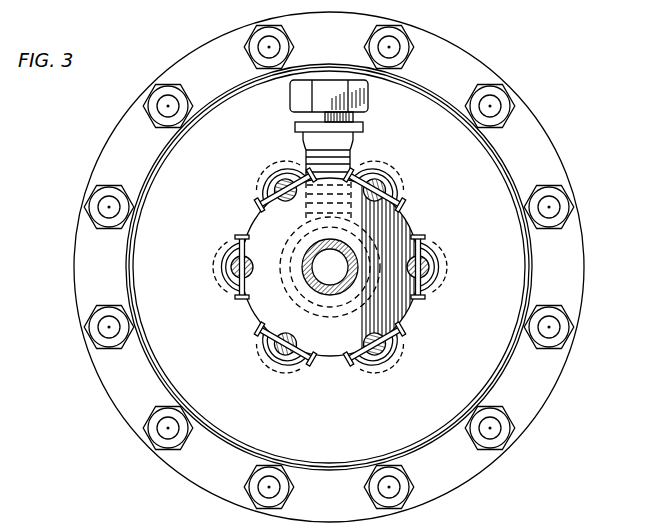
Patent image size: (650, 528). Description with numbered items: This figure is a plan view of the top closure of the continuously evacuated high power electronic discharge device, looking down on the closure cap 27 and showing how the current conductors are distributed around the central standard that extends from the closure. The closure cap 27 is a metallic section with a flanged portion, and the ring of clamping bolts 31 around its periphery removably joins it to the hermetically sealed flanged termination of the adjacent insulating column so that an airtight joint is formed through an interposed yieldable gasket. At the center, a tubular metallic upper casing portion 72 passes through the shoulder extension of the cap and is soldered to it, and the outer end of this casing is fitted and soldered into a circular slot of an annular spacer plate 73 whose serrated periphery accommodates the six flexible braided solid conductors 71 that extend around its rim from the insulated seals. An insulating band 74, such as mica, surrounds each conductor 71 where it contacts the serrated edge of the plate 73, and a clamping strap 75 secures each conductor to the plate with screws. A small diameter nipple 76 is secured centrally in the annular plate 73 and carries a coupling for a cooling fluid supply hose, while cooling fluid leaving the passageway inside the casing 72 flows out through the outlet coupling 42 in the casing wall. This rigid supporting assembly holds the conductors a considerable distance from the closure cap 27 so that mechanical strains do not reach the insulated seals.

The closure cap 27 is at (490, 178).
The clamping bolts 31 is at (506, 93).
The outlet coupling 42 is at (353, 147).
The flexible braided solid conductor 71 is at (433, 263).
The tubular metallic upper casing portion 72 is at (288, 248).
The annular spacer plate 73 is at (394, 237).
The insulating band 74 is at (425, 254).
The clamping strap 75 is at (434, 279).
The nipple 76 is at (308, 280).